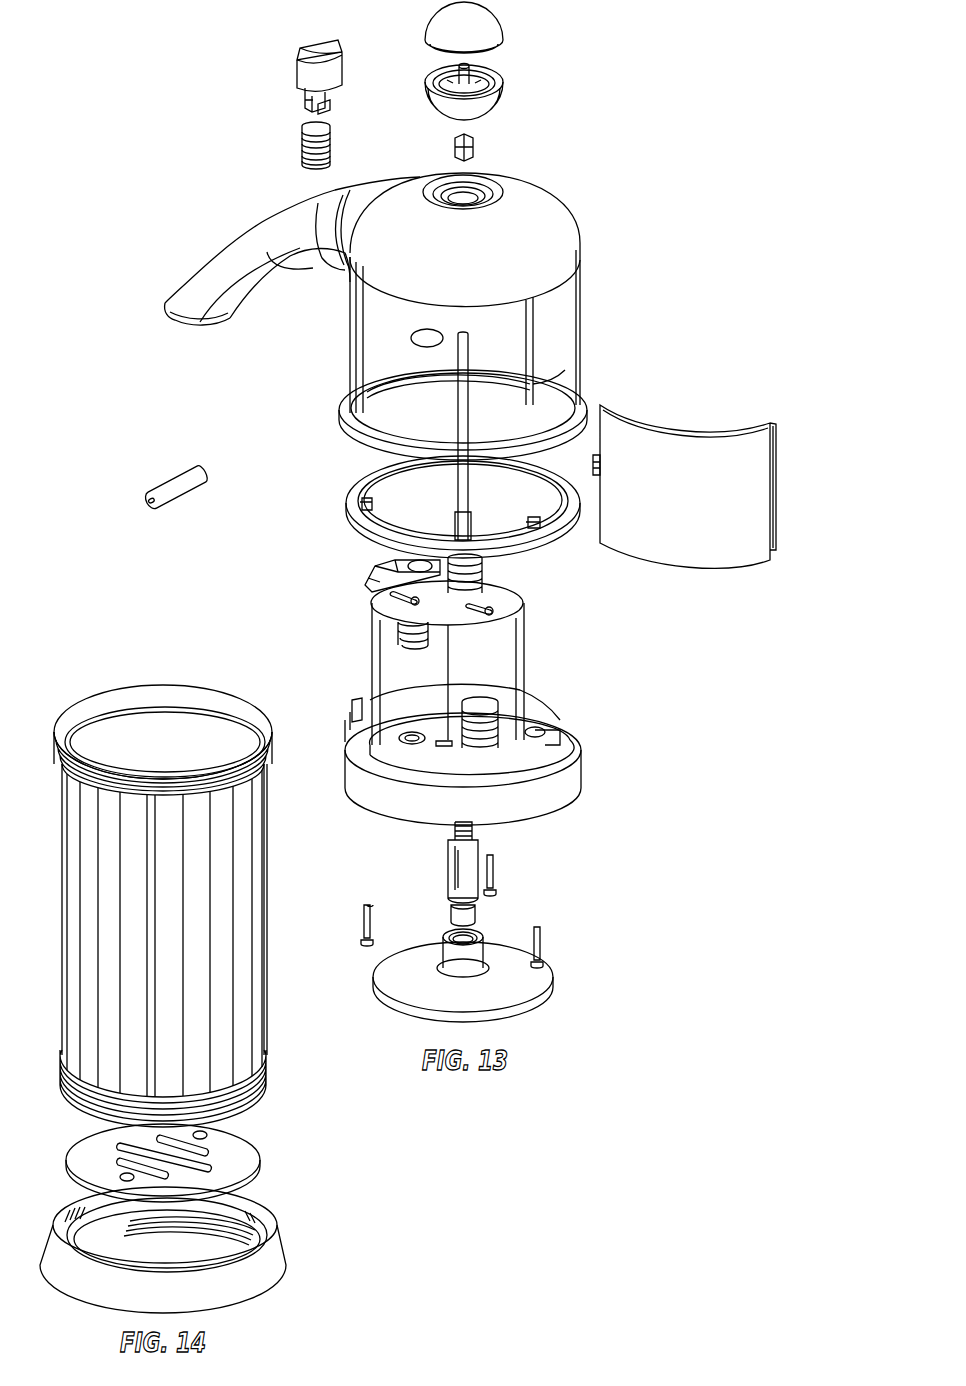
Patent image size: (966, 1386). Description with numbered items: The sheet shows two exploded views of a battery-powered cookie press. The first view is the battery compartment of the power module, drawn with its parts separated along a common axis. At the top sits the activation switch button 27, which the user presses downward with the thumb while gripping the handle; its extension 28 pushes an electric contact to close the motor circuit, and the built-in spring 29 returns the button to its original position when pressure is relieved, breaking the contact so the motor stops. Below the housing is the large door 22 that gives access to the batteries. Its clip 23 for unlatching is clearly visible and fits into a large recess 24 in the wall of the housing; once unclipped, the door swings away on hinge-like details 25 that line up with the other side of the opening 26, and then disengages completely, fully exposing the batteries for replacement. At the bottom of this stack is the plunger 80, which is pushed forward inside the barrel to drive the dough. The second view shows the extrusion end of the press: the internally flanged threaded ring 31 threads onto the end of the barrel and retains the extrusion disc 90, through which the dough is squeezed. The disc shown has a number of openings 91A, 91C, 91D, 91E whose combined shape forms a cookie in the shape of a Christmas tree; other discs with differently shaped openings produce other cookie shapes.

In FIG. 13, the door 22 is at (705, 510).
In FIG. 13, the clip 23 is at (596, 476).
In FIG. 13, the recess 24 is at (348, 358).
In FIG. 13, the hinge-like details 25 is at (780, 478).
In FIG. 13, the opening 26 is at (560, 370).
In FIG. 13, the activation switch button 27 is at (320, 50).
In FIG. 13, the extension 28 is at (326, 104).
In FIG. 13, the spring 29 is at (302, 146).
In FIG. 13, the plunger 80 is at (530, 978).
In FIG. 14, the threaded ring 31 is at (273, 1267).
In FIG. 14, the extrusion disc 90 is at (168, 1152).
In FIG. 14, the opening 91A is at (118, 1161).
In FIG. 14, the opening 91C is at (120, 1146).
In FIG. 14, the opening 91D is at (208, 1153).
In FIG. 14, the opening 91E is at (207, 1135).